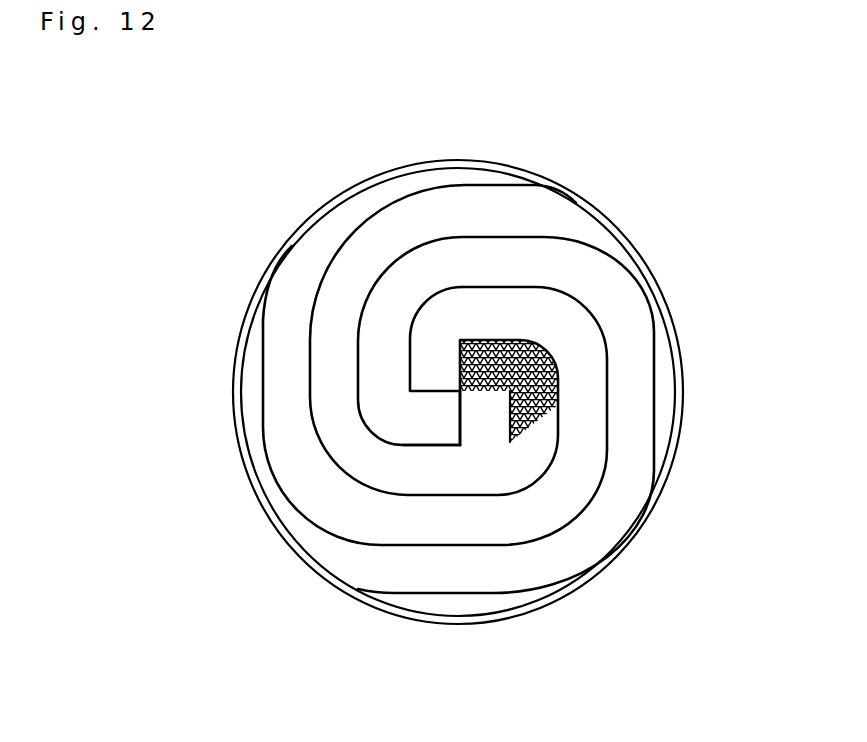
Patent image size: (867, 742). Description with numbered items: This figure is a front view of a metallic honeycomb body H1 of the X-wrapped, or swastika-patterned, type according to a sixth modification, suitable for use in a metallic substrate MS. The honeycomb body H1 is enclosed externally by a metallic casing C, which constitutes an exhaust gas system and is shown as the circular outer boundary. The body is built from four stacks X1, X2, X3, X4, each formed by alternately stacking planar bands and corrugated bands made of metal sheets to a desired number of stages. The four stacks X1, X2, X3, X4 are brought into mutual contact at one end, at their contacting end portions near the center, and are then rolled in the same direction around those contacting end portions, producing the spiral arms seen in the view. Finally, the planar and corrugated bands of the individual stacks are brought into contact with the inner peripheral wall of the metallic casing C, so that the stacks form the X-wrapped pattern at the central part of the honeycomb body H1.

The metallic casing C is at (614, 221).
The metallic substrate MS is at (346, 175).
The metallic honeycomb body H1 is at (314, 257).
The stack X1 is at (543, 428).
The stack X2 is at (475, 435).
The stack X3 is at (434, 421).
The stack X4 is at (430, 374).